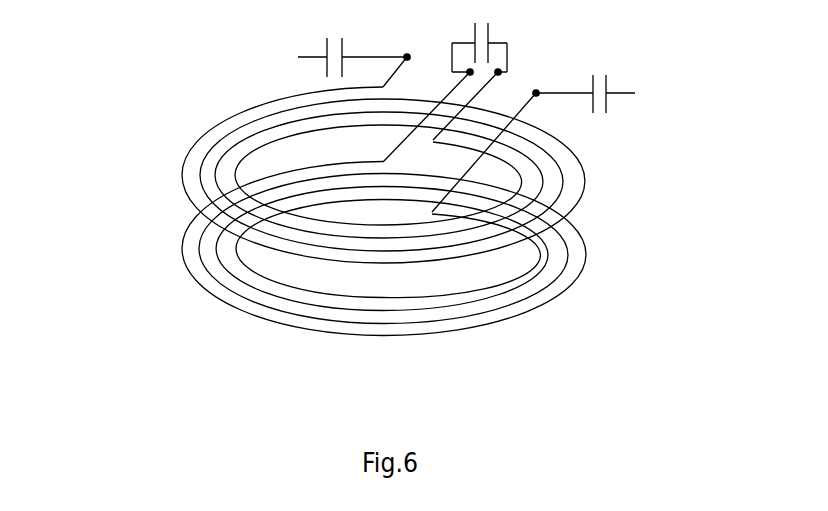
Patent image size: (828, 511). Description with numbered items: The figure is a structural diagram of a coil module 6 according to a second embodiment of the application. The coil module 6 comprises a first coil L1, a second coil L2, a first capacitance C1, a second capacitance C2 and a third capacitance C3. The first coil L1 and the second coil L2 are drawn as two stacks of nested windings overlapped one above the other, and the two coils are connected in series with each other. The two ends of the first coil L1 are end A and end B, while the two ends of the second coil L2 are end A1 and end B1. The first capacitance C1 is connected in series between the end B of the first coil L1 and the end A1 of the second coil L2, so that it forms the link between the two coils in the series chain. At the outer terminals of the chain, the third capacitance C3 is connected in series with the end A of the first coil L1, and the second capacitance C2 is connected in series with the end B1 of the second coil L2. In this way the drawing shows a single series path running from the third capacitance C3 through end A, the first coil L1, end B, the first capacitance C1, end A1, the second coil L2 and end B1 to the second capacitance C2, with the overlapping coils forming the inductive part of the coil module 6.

The coil module 6 is at (170, 178).
The first coil L1 is at (585, 177).
The second coil L2 is at (586, 268).
The first capacitance C1 is at (479, 36).
The second capacitance C2 is at (585, 82).
The third capacitance C3 is at (352, 45).
The end A is at (395, 59).
The end A1 is at (428, 115).
The end B is at (474, 104).
The end B1 is at (500, 151).